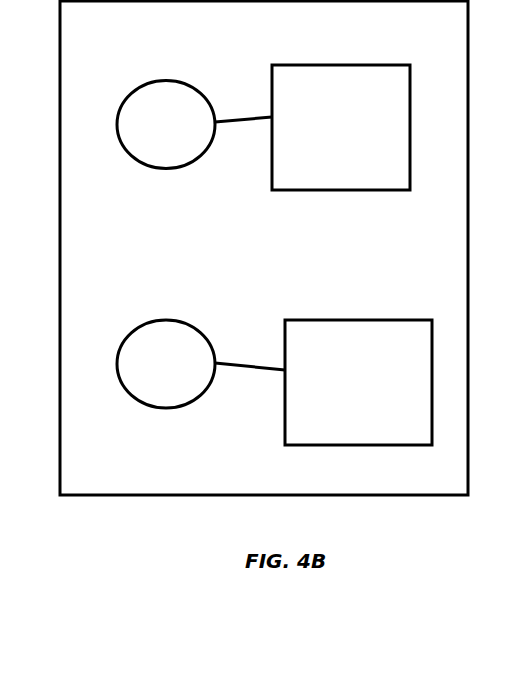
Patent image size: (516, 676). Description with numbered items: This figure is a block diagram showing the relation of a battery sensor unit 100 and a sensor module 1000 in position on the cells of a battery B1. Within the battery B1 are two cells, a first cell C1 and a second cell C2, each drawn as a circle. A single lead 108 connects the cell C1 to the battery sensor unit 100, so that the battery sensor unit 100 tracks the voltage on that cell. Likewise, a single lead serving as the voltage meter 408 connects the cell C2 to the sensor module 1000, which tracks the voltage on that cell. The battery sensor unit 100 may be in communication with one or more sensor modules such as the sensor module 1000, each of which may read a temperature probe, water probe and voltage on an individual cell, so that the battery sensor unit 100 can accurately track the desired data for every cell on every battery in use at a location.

The battery B1 is at (60, 458).
The cell C1 is at (136, 160).
The cell C2 is at (136, 400).
The connection line 108 is at (226, 121).
The voltage meter 408 is at (236, 366).
The battery sensor unit 100 is at (341, 127).
The sensor module 1000 is at (358, 382).